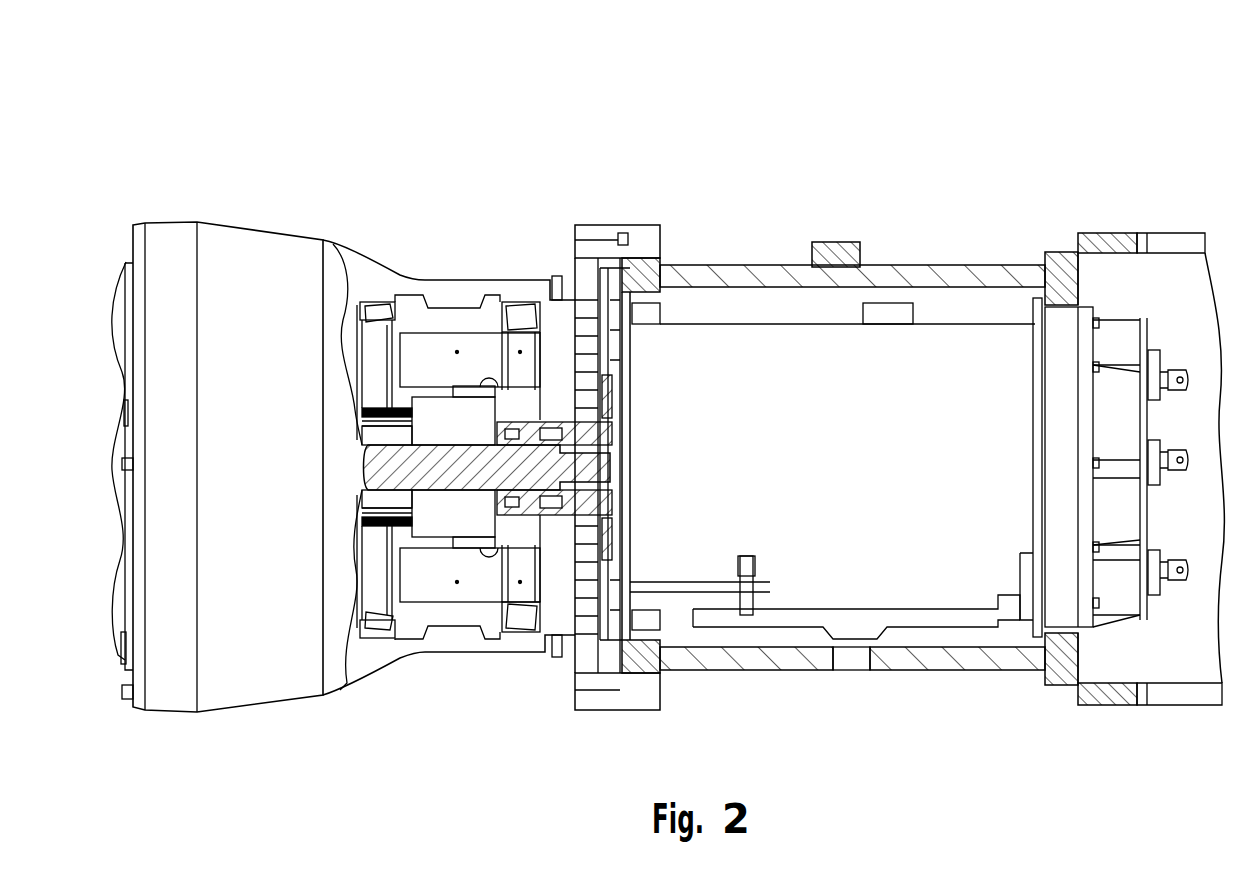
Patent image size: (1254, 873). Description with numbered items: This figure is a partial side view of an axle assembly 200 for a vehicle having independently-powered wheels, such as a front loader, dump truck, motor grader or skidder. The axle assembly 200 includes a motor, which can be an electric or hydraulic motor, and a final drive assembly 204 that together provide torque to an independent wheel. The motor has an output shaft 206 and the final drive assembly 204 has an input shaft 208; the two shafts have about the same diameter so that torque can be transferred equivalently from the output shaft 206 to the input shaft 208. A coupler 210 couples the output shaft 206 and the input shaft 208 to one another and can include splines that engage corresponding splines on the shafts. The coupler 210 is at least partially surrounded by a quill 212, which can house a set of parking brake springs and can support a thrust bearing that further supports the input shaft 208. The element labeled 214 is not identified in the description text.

The axle assembly 200 is at (218, 121).
The final drive assembly 204 is at (292, 258).
The output shaft 206 is at (612, 440).
The input shaft 208 is at (462, 482).
The coupler 210 is at (555, 512).
The quill 212 is at (530, 412).
The housing tube 214 is at (948, 298).